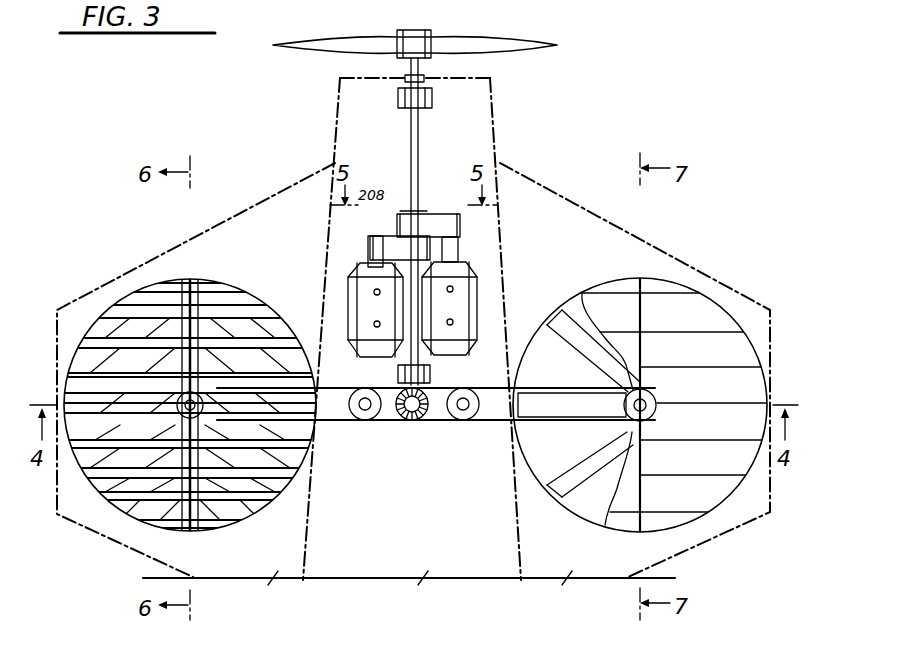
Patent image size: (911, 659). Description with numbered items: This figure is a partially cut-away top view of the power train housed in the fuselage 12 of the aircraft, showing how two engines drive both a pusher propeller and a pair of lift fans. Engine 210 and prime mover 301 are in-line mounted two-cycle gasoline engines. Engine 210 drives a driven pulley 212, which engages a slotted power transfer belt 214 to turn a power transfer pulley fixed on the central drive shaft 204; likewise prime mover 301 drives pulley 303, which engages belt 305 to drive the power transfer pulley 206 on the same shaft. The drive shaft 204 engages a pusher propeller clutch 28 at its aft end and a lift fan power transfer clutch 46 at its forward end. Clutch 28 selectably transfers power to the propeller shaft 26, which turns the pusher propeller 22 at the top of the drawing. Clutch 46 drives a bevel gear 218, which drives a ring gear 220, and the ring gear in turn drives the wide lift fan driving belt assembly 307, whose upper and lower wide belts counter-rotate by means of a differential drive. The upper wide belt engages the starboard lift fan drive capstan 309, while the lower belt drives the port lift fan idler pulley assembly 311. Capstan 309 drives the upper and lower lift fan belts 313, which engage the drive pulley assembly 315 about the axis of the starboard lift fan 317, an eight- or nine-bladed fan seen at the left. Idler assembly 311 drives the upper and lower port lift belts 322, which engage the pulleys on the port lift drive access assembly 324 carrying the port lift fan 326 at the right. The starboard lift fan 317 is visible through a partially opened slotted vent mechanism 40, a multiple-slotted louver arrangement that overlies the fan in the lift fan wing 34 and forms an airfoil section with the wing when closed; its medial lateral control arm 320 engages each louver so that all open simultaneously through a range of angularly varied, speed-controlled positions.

The fuselage 12 is at (512, 518).
The pusher propeller 22 is at (458, 40).
The propeller shaft 26 is at (402, 70).
The pusher propeller clutch 28 is at (442, 101).
The lift fan wing 34 is at (708, 546).
The slotted vent mechanism 40 is at (228, 495).
The lift fan power transfer clutch 46 is at (395, 376).
The central shaft 204 is at (402, 134).
The power transfer pulley 206 is at (286, 255).
The engine 210 is at (482, 290).
The driven pulley 212 is at (470, 213).
The slotted power transfer belt 214 is at (475, 232).
The bevel gear 218 is at (432, 424).
The ring gear 220 is at (400, 414).
The prime mover 301 is at (286, 273).
The pulley 303 is at (286, 220).
The belt 305 is at (286, 237).
The wide lift fan driving belt assembly 307 is at (386, 426).
The starboard lift fan drive capstan 309 is at (358, 414).
The port lift fan idler pulley assembly 311 is at (470, 415).
The upper and lower lift fan belts 313 is at (327, 425).
The upper and lower drive pulley assembly 315 is at (194, 392).
The starboard lift fan 317 is at (92, 330).
The medial lateral control arm 320 is at (192, 507).
The upper and lower port lift belts 322 is at (503, 426).
The port lift drive access assembly 324 is at (658, 411).
The lift fan 326 is at (588, 357).